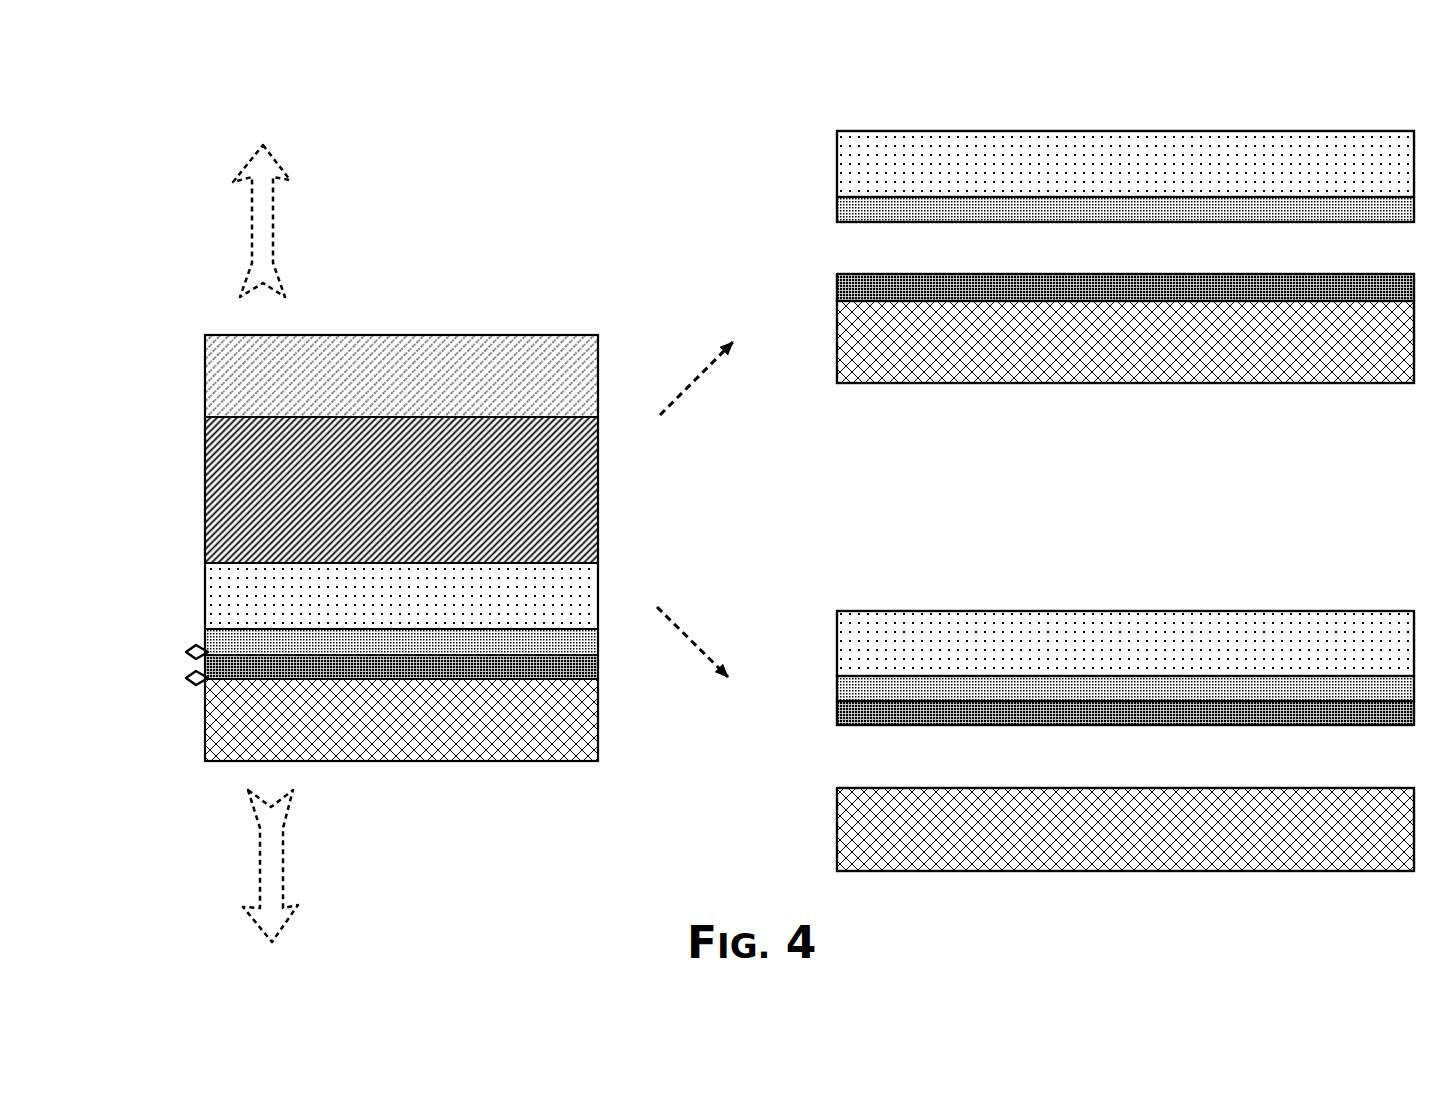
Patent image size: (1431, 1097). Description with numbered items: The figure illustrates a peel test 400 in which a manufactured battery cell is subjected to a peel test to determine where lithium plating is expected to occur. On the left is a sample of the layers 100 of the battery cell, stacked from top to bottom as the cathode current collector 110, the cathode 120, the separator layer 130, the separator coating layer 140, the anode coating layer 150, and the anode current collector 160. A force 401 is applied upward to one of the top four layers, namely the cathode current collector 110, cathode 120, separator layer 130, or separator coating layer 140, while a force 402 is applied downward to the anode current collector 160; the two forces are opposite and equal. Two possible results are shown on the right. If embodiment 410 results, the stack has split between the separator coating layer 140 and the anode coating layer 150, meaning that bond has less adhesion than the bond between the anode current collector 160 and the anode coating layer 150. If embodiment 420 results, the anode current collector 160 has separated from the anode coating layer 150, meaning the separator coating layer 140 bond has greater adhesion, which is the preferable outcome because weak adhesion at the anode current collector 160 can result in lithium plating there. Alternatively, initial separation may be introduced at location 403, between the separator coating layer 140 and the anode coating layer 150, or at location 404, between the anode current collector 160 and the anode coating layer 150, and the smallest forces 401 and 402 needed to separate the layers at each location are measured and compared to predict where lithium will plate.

The peel test 400 is at (193, 113).
The embodiment 410 is at (738, 112).
The embodiment 420 is at (818, 530).
The layers 100 is at (217, 277).
The force 401 is at (273, 190).
The force 402 is at (281, 830).
The cathode current collector 110 is at (205, 347).
The cathode 120 is at (205, 447).
The separator layer 130 is at (205, 568).
The separator coating layer 140 is at (598, 641).
The anode coating layer 150 is at (598, 668).
The anode current collector 160 is at (205, 755).
The location 403 is at (186, 652).
The location 404 is at (186, 678).